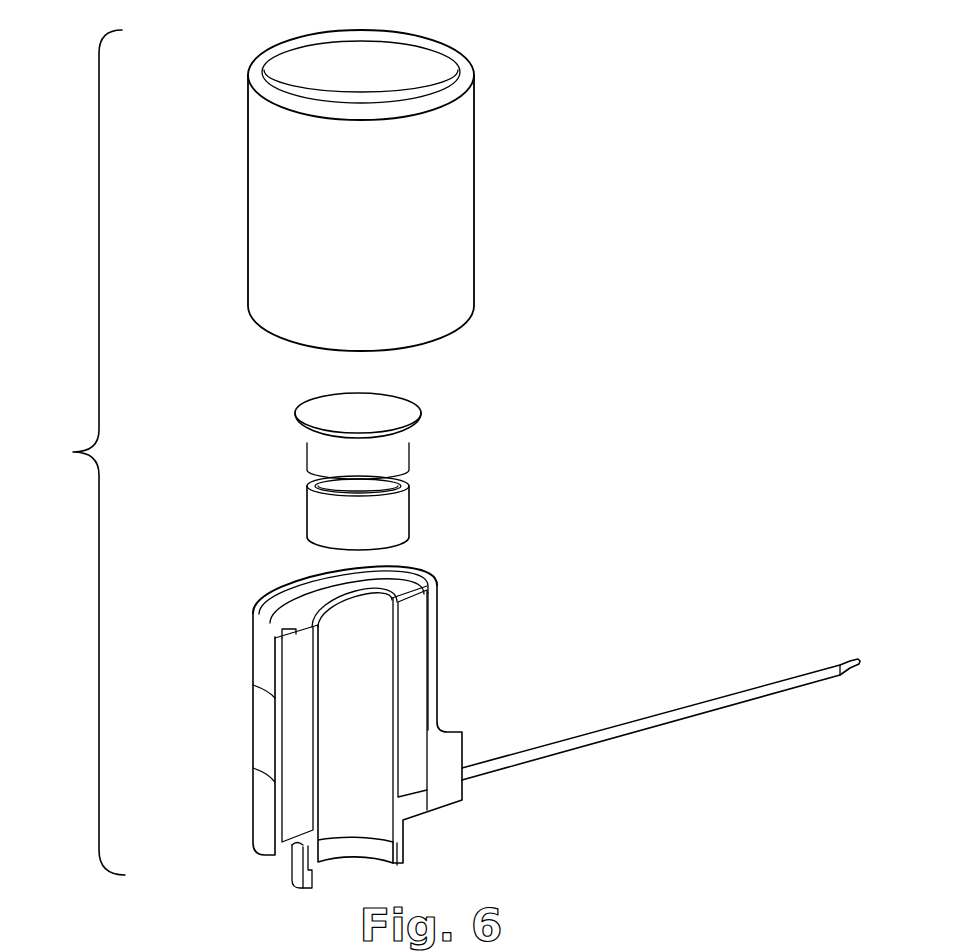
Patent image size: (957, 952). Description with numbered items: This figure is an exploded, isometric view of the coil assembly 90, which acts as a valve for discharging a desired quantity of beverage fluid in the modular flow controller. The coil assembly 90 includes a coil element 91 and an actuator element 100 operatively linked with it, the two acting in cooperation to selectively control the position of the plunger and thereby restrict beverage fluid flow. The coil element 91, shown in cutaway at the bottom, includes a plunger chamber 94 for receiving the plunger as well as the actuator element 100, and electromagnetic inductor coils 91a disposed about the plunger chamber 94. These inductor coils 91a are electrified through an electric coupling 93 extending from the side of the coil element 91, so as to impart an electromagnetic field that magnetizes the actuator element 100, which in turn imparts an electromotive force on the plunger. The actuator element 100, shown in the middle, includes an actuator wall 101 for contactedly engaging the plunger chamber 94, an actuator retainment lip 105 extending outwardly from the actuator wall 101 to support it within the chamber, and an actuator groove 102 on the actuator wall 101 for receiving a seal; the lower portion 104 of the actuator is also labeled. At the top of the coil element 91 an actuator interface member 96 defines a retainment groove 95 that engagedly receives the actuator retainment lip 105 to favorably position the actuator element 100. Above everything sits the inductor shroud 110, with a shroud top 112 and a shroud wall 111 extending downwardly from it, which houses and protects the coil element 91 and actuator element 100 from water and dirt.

The coil assembly 90 is at (78, 452).
The inductor shroud 110 is at (301, 190).
The shroud wall 111 is at (338, 244).
The shroud top 112 is at (338, 82).
The actuator element 100 is at (329, 471).
The actuator retainment lip 105 is at (336, 436).
The actuator wall 101 is at (388, 463).
The actuator groove 102 is at (382, 487).
The plunger base 104 is at (336, 537).
The coil element 91 is at (536, 724).
The electromagnetic inductor coils 91a is at (413, 678).
The electric coupling 93 is at (633, 722).
The plunger chamber 94 is at (340, 729).
The retainment groove 95 is at (323, 600).
The actuator interface member 96 is at (280, 603).